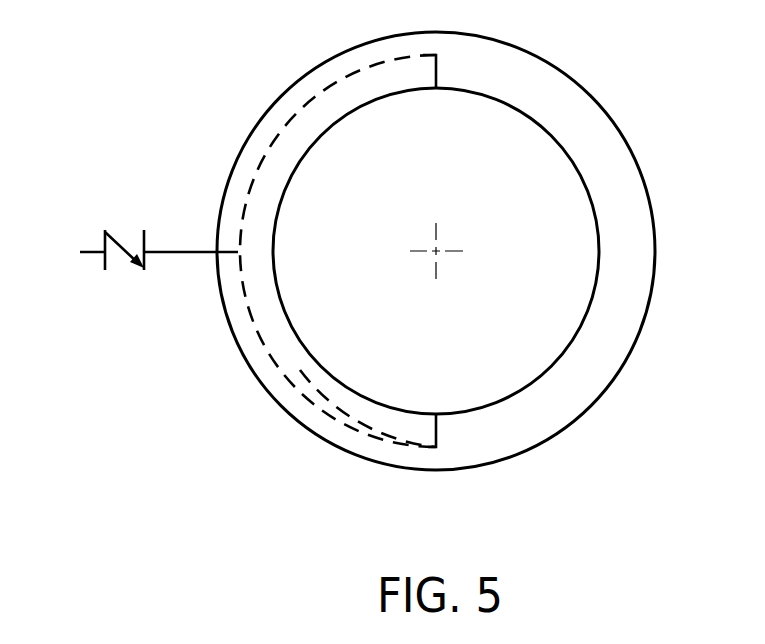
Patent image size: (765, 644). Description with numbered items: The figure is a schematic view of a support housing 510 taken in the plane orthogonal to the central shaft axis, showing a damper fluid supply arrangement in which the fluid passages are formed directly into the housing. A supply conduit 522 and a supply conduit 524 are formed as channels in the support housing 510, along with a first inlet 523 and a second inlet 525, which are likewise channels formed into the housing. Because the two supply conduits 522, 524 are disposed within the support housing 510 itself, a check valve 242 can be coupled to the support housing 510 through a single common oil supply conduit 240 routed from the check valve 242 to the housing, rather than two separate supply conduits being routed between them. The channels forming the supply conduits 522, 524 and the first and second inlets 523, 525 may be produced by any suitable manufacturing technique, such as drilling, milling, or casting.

The support housing 510 is at (637, 225).
The supply conduit 522 is at (340, 77).
The first inlet 523 is at (436, 62).
The supply conduit 524 is at (372, 441).
The second inlet 525 is at (438, 440).
The common oil supply conduit 240 is at (102, 232).
The check valve 242 is at (127, 222).